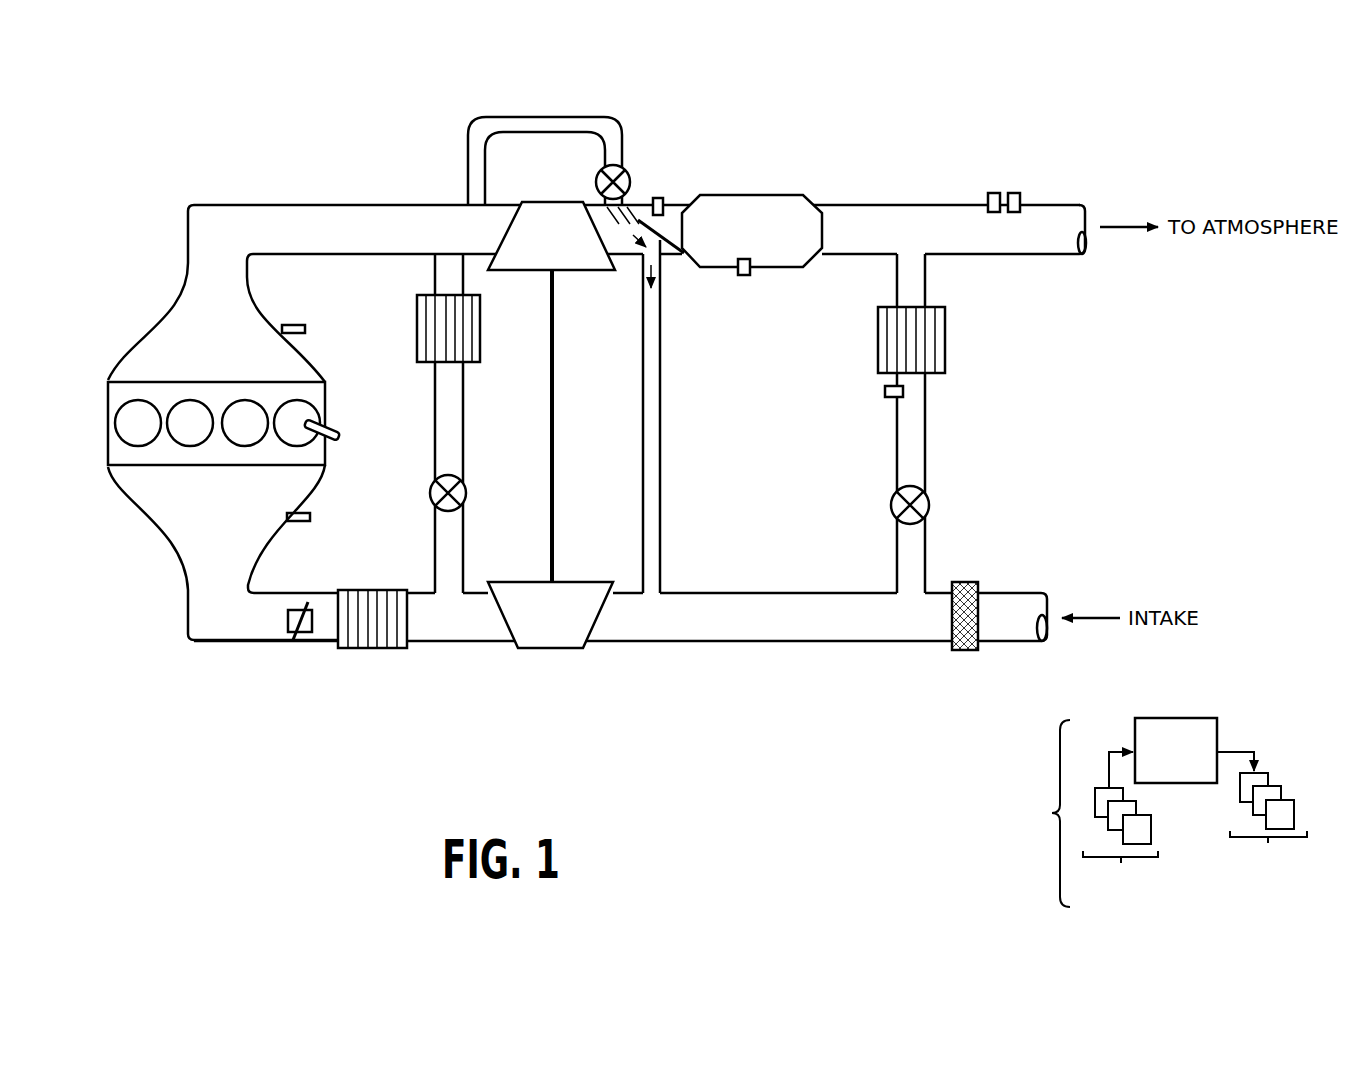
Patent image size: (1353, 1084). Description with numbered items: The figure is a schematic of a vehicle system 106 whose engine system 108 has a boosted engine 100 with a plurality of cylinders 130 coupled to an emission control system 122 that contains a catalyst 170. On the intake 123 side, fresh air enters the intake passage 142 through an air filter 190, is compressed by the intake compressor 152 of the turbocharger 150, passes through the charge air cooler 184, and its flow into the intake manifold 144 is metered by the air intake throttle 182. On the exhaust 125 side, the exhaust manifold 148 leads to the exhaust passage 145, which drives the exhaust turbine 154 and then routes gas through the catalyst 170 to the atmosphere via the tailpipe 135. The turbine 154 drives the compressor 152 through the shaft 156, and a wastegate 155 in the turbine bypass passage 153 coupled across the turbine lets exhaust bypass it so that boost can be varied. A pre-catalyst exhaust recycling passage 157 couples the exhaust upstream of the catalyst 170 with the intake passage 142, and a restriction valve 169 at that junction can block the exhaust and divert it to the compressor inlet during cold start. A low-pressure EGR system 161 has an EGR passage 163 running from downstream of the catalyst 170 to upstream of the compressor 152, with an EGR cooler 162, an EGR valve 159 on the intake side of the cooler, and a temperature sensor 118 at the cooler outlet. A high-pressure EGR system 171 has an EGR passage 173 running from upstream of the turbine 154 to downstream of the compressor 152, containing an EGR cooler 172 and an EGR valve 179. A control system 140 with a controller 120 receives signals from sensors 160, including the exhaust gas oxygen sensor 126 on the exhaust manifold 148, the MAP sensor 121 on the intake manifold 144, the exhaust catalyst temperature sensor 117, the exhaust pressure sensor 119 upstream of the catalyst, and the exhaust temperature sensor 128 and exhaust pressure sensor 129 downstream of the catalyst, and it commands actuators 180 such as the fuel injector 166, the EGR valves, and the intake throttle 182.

The engine 100 is at (199, 382).
The vehicle system 106 is at (1204, 130).
The engine system 108 is at (146, 197).
The exhaust catalyst temperature sensor 117 is at (744, 276).
The temperature sensor 118 is at (885, 391).
The exhaust pressure sensor 119 is at (658, 198).
The controller 120 is at (1163, 762).
The MAP sensor 121 is at (292, 522).
The emission control system 122 is at (731, 168).
The intake 123 is at (222, 697).
The exhaust 125 is at (250, 166).
The exhaust gas oxygen sensor 126 is at (284, 325).
The exhaust temperature sensor 128 is at (993, 193).
The exhaust pressure sensor 129 is at (1012, 193).
The cylinders 130 is at (130, 402).
The tailpipe 135 is at (1071, 205).
The control system 140 is at (1142, 812).
The intake passage 142 is at (1005, 593).
The intake manifold 144 is at (235, 519).
The exhaust passage 145 is at (278, 205).
The exhaust manifold 148 is at (235, 332).
The turbocharger 150 is at (588, 379).
The intake compressor 152 is at (555, 650).
The turbine bypass passage 153 is at (553, 117).
The exhaust turbine 154 is at (530, 203).
The wastegate 155 is at (627, 170).
The shaft 156 is at (556, 447).
The pre-catalyst exhaust recycling passage 157 is at (661, 395).
The EGR valve 159 is at (928, 497).
The sensors 160 is at (1120, 827).
The low-pressure EGR system 161 is at (810, 389).
The EGR cooler 162 is at (877, 340).
The EGR passage 163 is at (897, 452).
The fuel injector 166 is at (339, 437).
The restriction valve 169 is at (657, 237).
The catalyst 170 is at (771, 239).
The high-pressure EGR system 171 is at (403, 382).
The EGR cooler 172 is at (416, 325).
The EGR passage 173 is at (434, 440).
The EGR valve 179 is at (466, 487).
The actuators 180 is at (1263, 819).
The air intake throttle 182 is at (288, 628).
The charge air cooler 184 is at (360, 590).
The air filter 190 is at (965, 582).